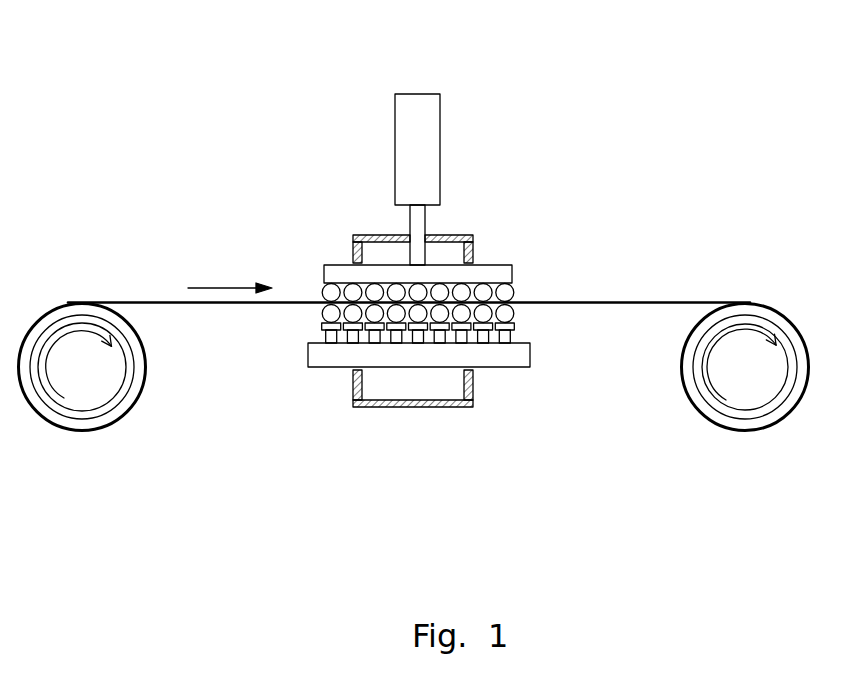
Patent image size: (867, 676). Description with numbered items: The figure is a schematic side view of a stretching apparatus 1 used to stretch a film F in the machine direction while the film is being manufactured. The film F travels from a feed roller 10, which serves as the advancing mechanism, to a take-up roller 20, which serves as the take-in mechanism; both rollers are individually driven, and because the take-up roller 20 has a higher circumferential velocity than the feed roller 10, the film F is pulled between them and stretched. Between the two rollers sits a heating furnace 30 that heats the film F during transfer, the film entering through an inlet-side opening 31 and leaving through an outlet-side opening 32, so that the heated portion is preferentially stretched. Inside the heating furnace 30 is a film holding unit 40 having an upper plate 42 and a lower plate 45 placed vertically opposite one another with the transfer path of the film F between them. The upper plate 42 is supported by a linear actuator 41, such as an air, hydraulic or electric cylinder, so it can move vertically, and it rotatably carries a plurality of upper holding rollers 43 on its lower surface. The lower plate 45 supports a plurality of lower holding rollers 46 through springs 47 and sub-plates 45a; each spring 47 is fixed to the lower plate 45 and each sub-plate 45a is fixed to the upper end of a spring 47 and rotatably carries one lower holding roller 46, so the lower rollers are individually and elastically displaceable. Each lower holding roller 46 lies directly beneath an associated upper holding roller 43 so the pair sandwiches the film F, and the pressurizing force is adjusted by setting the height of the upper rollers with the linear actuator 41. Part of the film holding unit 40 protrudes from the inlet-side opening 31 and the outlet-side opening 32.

The stretching apparatus 1 is at (163, 120).
The film F is at (162, 302).
The feed roller 10 is at (88, 403).
The take-up roller 20 is at (760, 403).
The heating furnace 30 is at (457, 233).
The inlet-side opening 31 is at (353, 372).
The outlet-side opening 32 is at (473, 372).
The film holding unit 40 is at (322, 232).
The linear actuator 41 is at (401, 129).
The upper plate 42 is at (325, 275).
The upper holding rollers 43 is at (505, 293).
The lower plate 45 is at (327, 355).
The sub-plates 45a is at (325, 325).
The lower holding rollers 46 is at (513, 312).
The springs 47 is at (510, 335).